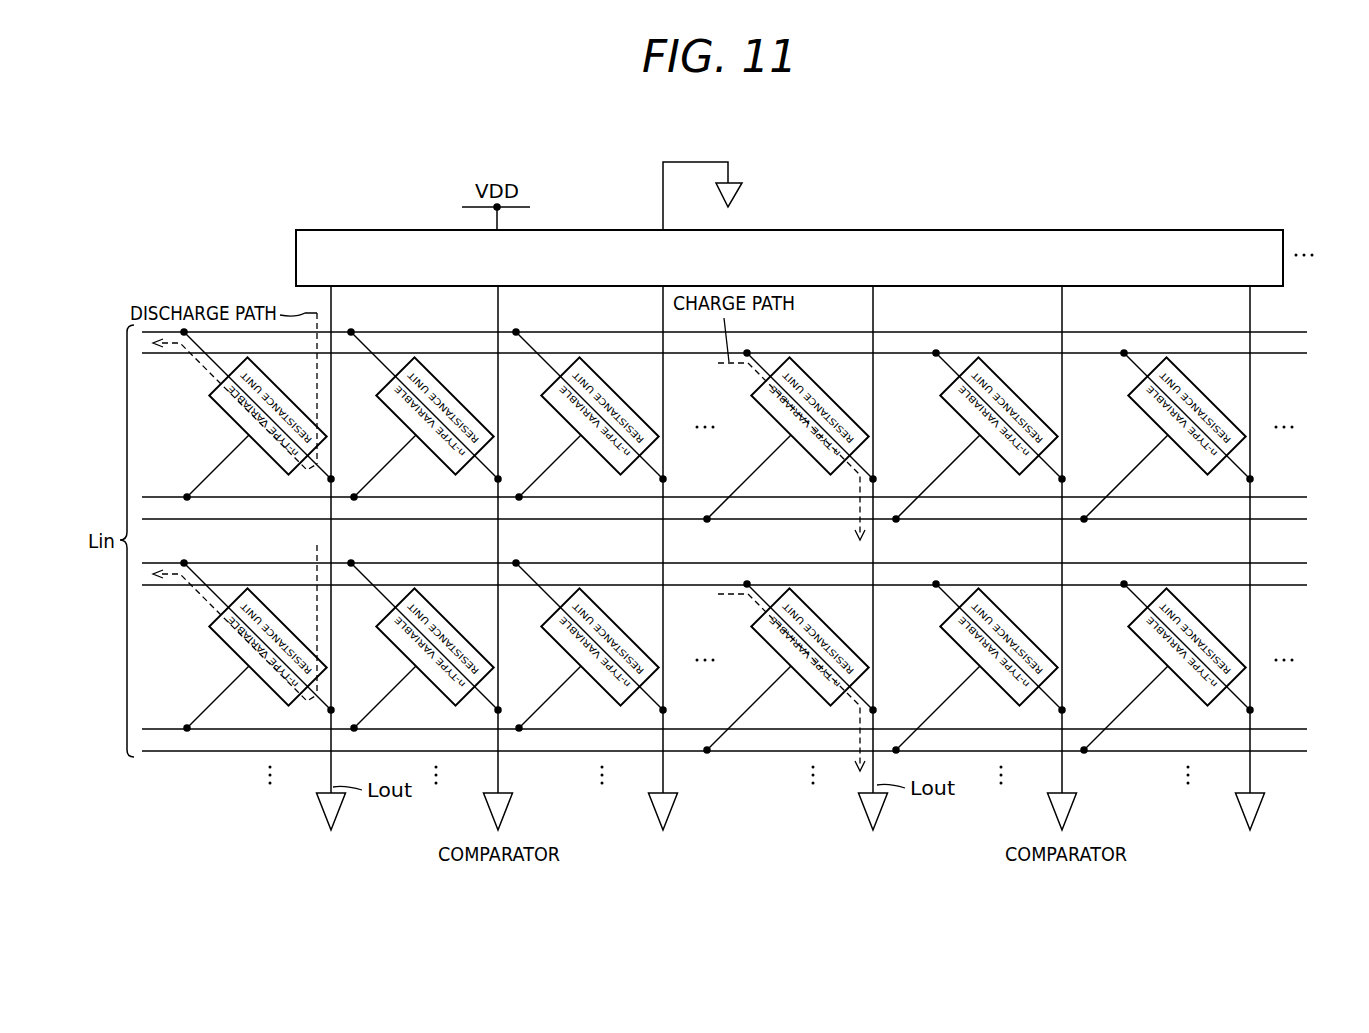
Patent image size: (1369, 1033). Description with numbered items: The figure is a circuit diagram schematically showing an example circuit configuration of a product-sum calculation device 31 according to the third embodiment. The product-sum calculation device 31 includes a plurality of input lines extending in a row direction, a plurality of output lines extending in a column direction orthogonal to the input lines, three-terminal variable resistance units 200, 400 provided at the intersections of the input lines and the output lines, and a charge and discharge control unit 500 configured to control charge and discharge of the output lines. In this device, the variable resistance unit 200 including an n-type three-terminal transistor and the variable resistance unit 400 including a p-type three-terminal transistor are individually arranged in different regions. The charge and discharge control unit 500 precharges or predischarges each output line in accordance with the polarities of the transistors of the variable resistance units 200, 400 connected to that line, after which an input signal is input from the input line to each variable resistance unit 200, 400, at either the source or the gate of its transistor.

The product-sum calculation device 31 is at (914, 162).
The charge and discharge control unit 500 is at (850, 229).
The variable resistance unit 200 is at (228, 418).
The variable resistance unit 400 is at (762, 405).